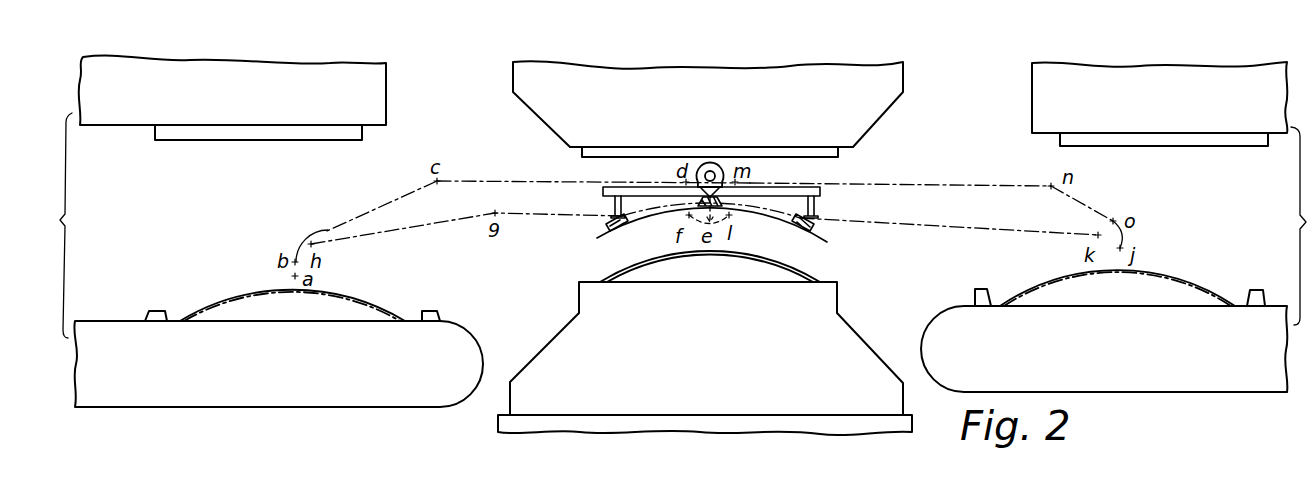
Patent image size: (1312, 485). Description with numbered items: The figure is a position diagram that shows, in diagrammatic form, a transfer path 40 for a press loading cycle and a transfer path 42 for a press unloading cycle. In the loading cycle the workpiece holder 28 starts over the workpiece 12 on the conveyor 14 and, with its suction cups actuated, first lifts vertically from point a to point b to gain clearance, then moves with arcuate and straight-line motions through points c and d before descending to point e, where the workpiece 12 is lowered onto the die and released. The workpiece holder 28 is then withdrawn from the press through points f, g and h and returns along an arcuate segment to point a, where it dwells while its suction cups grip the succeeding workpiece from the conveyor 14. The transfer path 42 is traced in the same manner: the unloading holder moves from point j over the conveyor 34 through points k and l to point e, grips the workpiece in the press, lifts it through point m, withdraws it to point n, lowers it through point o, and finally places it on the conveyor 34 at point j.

The workpiece 12 is at (212, 303).
The conveyor 14 is at (187, 393).
The workpiece holder 28 is at (717, 166).
The conveyor 34 is at (1235, 378).
The transfer path 40 is at (525, 170).
The transfer path 42 is at (913, 177).